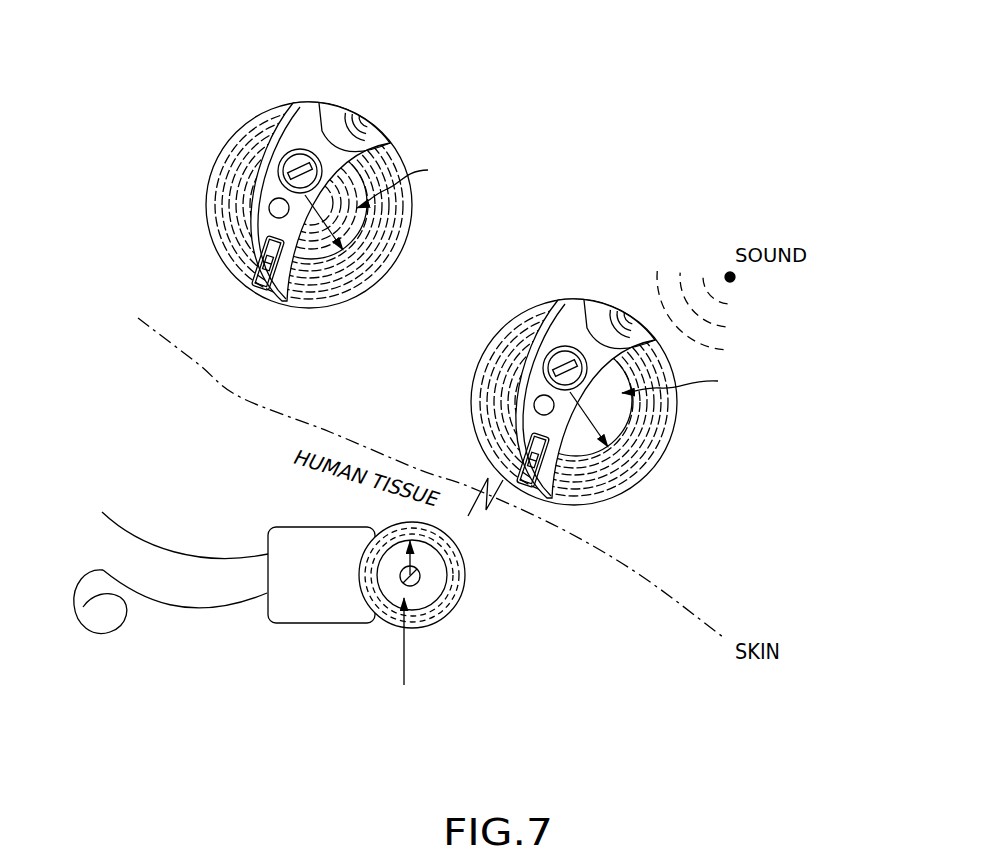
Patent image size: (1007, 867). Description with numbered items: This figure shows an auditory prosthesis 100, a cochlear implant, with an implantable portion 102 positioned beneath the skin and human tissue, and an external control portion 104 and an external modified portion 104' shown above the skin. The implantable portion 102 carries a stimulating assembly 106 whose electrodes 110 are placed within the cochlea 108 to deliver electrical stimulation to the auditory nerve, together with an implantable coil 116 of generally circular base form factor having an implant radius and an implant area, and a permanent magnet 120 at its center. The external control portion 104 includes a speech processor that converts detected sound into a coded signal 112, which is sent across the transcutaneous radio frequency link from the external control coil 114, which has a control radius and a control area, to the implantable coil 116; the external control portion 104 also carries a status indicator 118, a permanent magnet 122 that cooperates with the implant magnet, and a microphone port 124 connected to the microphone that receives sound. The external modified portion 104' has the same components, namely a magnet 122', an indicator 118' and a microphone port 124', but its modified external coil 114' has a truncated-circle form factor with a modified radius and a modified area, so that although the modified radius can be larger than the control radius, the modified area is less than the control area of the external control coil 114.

The auditory prosthesis 100 is at (735, 508).
The implantable portion 102 is at (287, 690).
The external control portion 104 is at (609, 330).
The external modified portion 104' is at (342, 167).
The stimulating assembly 106 is at (345, 623).
The cochlea 108 is at (82, 716).
The electrodes 110 is at (116, 520).
The coded signal 112 is at (466, 512).
The external control coil 114 is at (620, 402).
The modified external coil 114' is at (354, 205).
The implantable coil 116 is at (462, 597).
The status indicator 118 is at (583, 492).
The indicator 118' is at (287, 302).
The permanent magnet 120 is at (412, 586).
The permanent magnet 122 is at (565, 319).
The magnet 122' is at (301, 121).
The microphone port 124 is at (483, 394).
The microphone port 124' is at (219, 186).